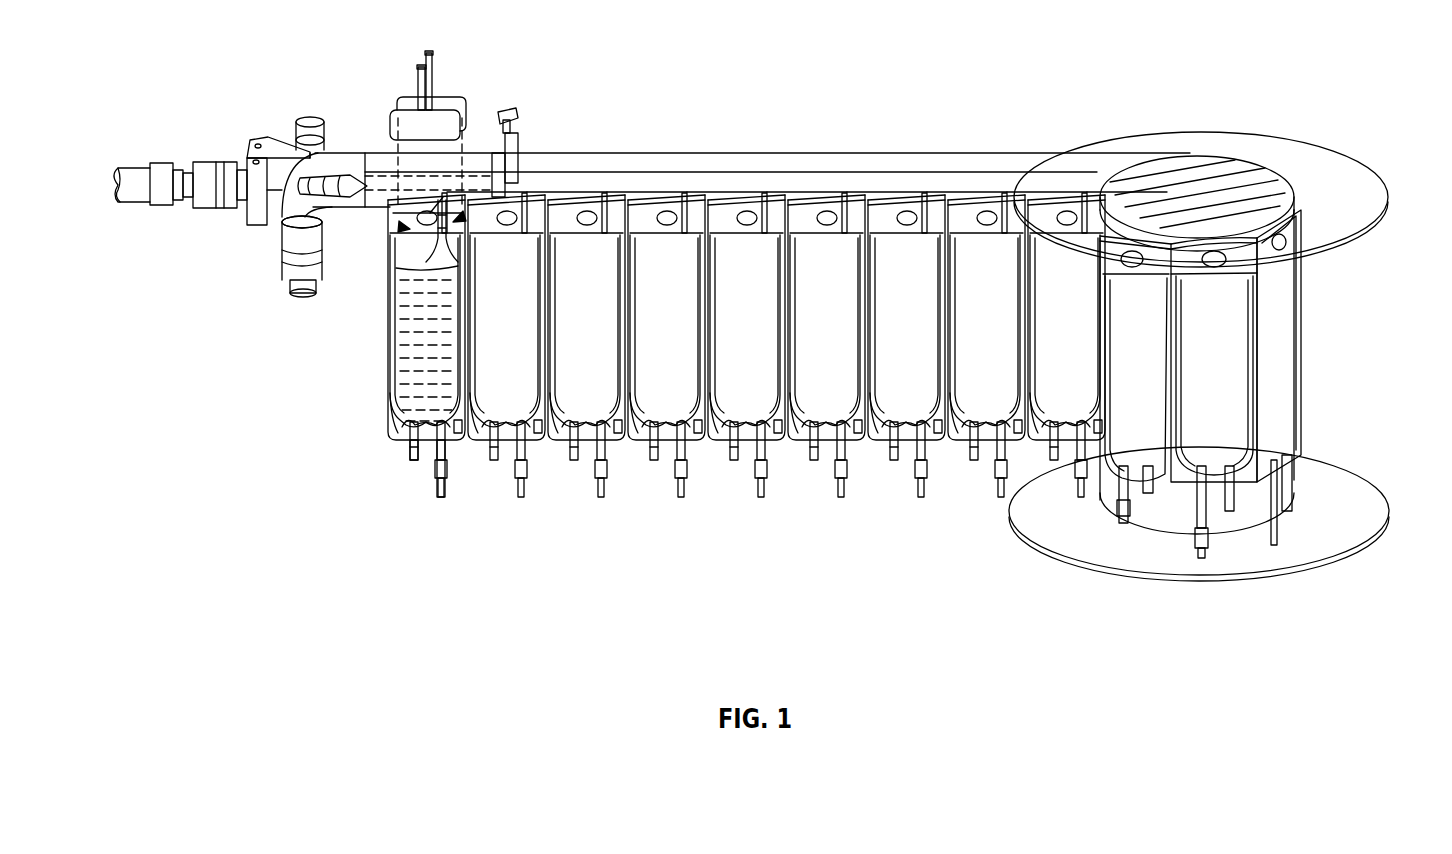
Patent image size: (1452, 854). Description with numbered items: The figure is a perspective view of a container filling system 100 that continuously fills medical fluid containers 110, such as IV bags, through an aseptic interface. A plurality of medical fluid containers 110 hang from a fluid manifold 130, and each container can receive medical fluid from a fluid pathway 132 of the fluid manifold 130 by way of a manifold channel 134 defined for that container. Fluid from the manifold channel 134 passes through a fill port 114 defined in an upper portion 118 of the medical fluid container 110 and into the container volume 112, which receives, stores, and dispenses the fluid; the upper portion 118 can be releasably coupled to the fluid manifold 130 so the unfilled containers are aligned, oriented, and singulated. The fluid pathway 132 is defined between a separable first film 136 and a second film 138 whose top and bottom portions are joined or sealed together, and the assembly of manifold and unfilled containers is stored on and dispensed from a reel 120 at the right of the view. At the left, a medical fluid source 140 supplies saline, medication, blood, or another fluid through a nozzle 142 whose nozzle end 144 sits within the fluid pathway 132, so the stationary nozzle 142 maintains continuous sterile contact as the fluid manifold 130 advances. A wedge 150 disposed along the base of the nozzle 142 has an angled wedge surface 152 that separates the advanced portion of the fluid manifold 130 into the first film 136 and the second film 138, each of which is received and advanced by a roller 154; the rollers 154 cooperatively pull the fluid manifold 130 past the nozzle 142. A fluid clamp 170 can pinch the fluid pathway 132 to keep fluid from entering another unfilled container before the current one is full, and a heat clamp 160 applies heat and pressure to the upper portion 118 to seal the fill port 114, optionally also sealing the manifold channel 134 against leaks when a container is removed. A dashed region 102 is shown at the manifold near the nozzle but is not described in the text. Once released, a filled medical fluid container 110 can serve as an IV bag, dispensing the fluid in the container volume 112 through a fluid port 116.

The container filling system 100 is at (1318, 46).
The fluid passage 102 is at (377, 180).
The medical fluid container 110 is at (395, 380).
The container volume 112 is at (388, 327).
The fill port 114 is at (447, 223).
The fluid port 116 is at (438, 457).
The upper portion 118 is at (398, 223).
The reel 120 is at (1361, 181).
The fluid manifold 130 is at (807, 165).
The fluid pathway 132 is at (472, 173).
The manifold channel 134 is at (445, 196).
The first film 136 is at (285, 223).
The second film 138 is at (300, 140).
The medical fluid source 140 is at (130, 167).
The nozzle 142 is at (210, 167).
The nozzle end 144 is at (340, 177).
The wedge 150 is at (270, 148).
The wedge surface 152 is at (273, 195).
The roller 154 is at (320, 120).
The heat clamp 160 is at (443, 93).
The fluid clamp 170 is at (517, 137).